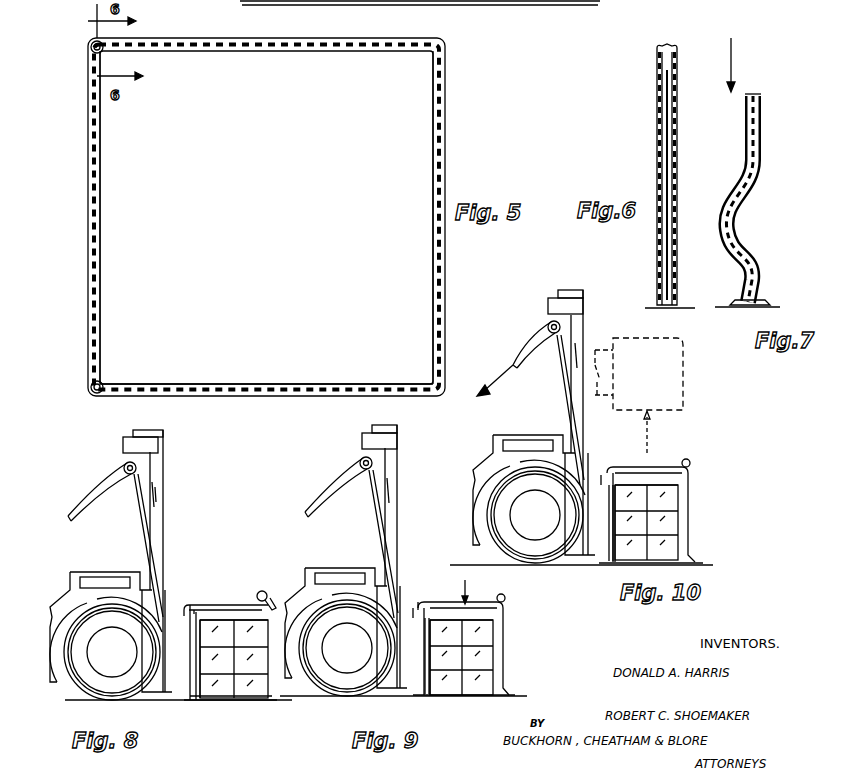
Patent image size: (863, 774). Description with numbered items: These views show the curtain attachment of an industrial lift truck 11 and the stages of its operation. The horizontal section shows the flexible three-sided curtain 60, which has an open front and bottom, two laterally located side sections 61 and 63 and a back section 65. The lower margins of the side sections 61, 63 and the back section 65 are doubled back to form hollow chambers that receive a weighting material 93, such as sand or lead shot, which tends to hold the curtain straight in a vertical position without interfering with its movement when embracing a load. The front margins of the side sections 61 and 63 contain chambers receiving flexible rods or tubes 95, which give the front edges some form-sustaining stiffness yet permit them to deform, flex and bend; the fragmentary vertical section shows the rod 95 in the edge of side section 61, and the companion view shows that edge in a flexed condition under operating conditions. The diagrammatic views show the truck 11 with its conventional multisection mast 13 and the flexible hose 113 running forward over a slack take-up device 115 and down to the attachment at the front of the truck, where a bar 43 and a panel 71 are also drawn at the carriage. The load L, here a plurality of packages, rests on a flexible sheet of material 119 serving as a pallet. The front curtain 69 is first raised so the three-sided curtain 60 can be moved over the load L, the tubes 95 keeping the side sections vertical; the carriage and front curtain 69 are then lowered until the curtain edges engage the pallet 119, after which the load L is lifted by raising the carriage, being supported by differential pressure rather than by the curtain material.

In FIG. 8, the industrial lift truck 11 is at (108, 636).
In FIG. 9, the industrial lift truck 11 is at (346, 632).
In FIG. 10, the industrial lift truck 11 is at (526, 499).
In FIG. 8, the multisection mast 13 is at (159, 561).
In FIG. 9, the multisection mast 13 is at (398, 556).
In FIG. 10, the multisection mast 13 is at (581, 422).
In FIG. 8, the tilting handle bar 43 is at (226, 596).
In FIG. 9, the tilting handle bar 43 is at (455, 595).
In FIG. 10, the tilting handle bar 43 is at (653, 461).
In FIG. 5, the three-sided curtain 60 is at (508, 4).
In FIG. 5, the side section 61 is at (330, 47).
In FIG. 6, the side section 61 is at (677, 190).
In FIG. 7, the side section 61 is at (763, 160).
In FIG. 5, the side section 63 is at (318, 383).
In FIG. 5, the back section 65 is at (437, 231).
In FIG. 8, the back section 65 is at (216, 653).
In FIG. 9, the back section 65 is at (438, 658).
In FIG. 10, the back section 65 is at (625, 523).
In FIG. 5, the front curtain 69 is at (96, 250).
In FIG. 8, the front curtain 69 is at (278, 592).
In FIG. 9, the front curtain 69 is at (413, 637).
In FIG. 10, the front curtain 69 is at (668, 510).
In FIG. 8, the frame panel 71 is at (234, 659).
In FIG. 9, the frame panel 71 is at (461, 657).
In FIG. 10, the frame panel 71 is at (646, 523).
In FIG. 5, the weighting material 93 is at (600, 1).
In FIG. 5, the flexible rods or tubes 95 is at (103, 42).
In FIG. 6, the flexible rods or tubes 95 is at (665, 124).
In FIG. 7, the flexible rods or tubes 95 is at (760, 135).
In FIG. 8, the flexible hose 113 is at (99, 492).
In FIG. 9, the flexible hose 113 is at (336, 487).
In FIG. 10, the flexible hose 113 is at (516, 359).
In FIG. 8, the slack take-up device 115 is at (159, 463).
In FIG. 9, the slack take-up device 115 is at (401, 457).
In FIG. 10, the slack take-up device 115 is at (530, 325).
In FIG. 8, the flexible sheet of material 119 is at (230, 716).
In FIG. 9, the flexible sheet of material 119 is at (464, 708).
In FIG. 10, the flexible sheet of material 119 is at (668, 555).
In FIG. 8, the load L is at (226, 677).
In FIG. 9, the load L is at (473, 655).
In FIG. 10, the load L is at (663, 449).